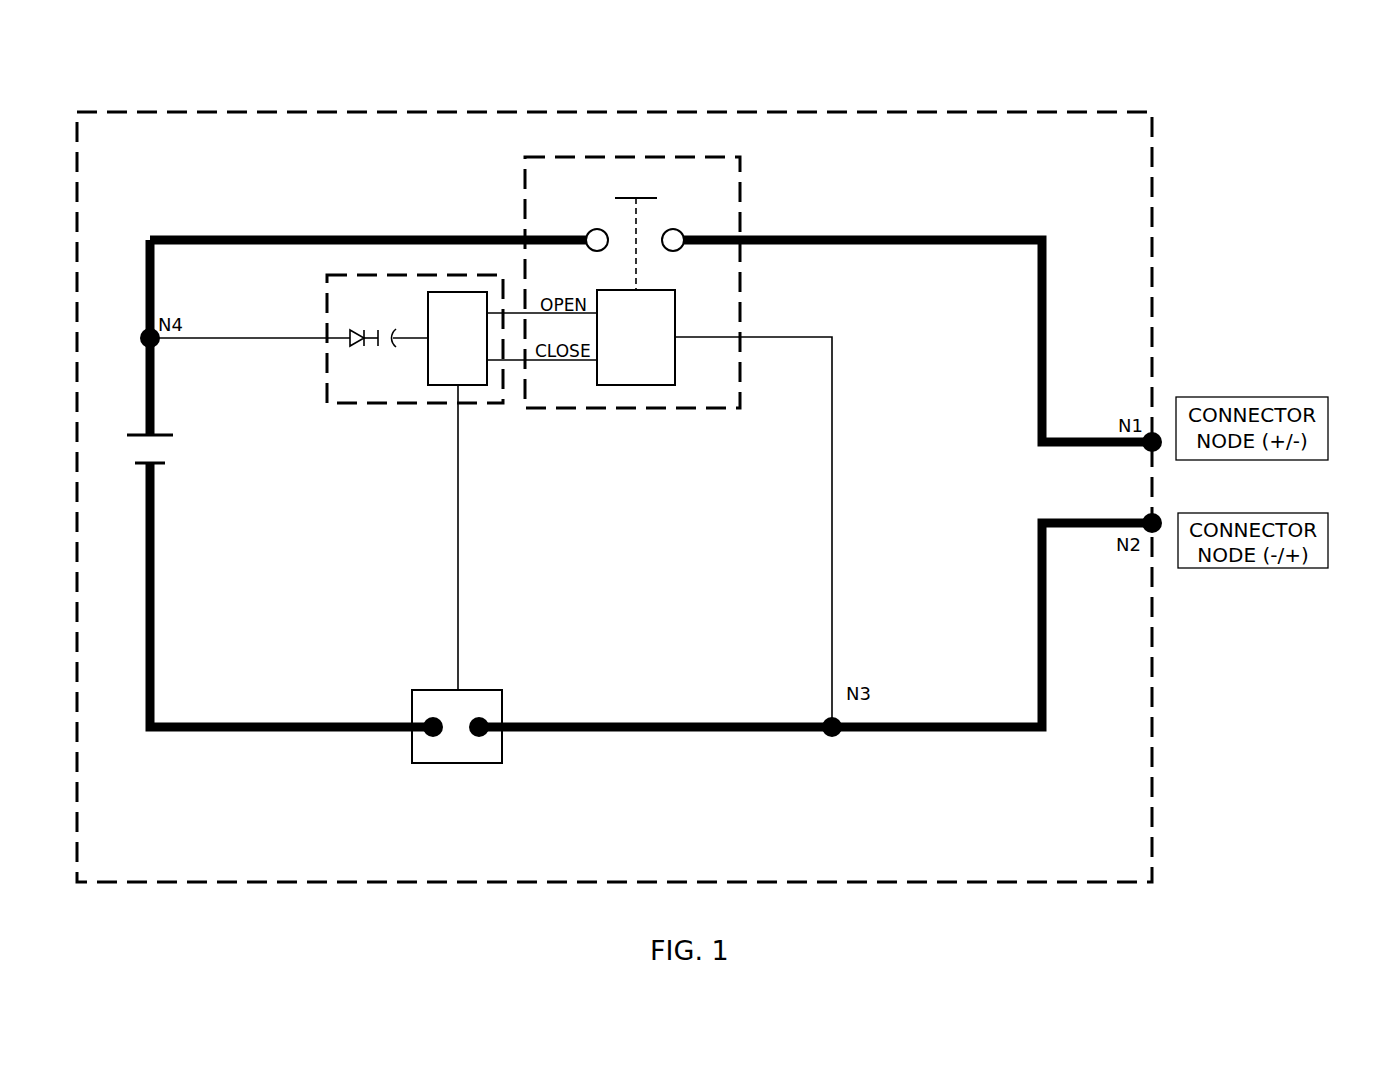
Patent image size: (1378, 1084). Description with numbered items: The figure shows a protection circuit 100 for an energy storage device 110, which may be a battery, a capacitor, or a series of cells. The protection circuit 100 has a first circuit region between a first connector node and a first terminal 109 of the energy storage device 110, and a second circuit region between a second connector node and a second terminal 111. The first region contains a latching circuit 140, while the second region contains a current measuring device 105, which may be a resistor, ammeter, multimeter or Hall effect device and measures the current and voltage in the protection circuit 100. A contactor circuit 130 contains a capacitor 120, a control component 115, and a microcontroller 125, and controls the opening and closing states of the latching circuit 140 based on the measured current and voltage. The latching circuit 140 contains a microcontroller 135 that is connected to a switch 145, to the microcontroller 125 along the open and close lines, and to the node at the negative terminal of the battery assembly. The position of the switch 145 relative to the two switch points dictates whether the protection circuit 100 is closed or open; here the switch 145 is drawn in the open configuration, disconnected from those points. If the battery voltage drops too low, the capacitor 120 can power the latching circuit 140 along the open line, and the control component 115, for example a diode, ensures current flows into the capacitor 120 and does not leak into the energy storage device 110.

The protection circuit 100 is at (1167, 88).
The current measuring device 105 is at (472, 710).
The first terminal 109 is at (172, 442).
The energy storage device 110 is at (156, 452).
The second terminal 111 is at (168, 458).
The control component 115 is at (355, 349).
The capacitor 120 is at (408, 322).
The microcontroller 125 is at (457, 338).
The contactor circuit 130 is at (387, 387).
The microcontroller 135 is at (636, 337).
The latching circuit 140 is at (632, 332).
The switch 145 is at (636, 228).